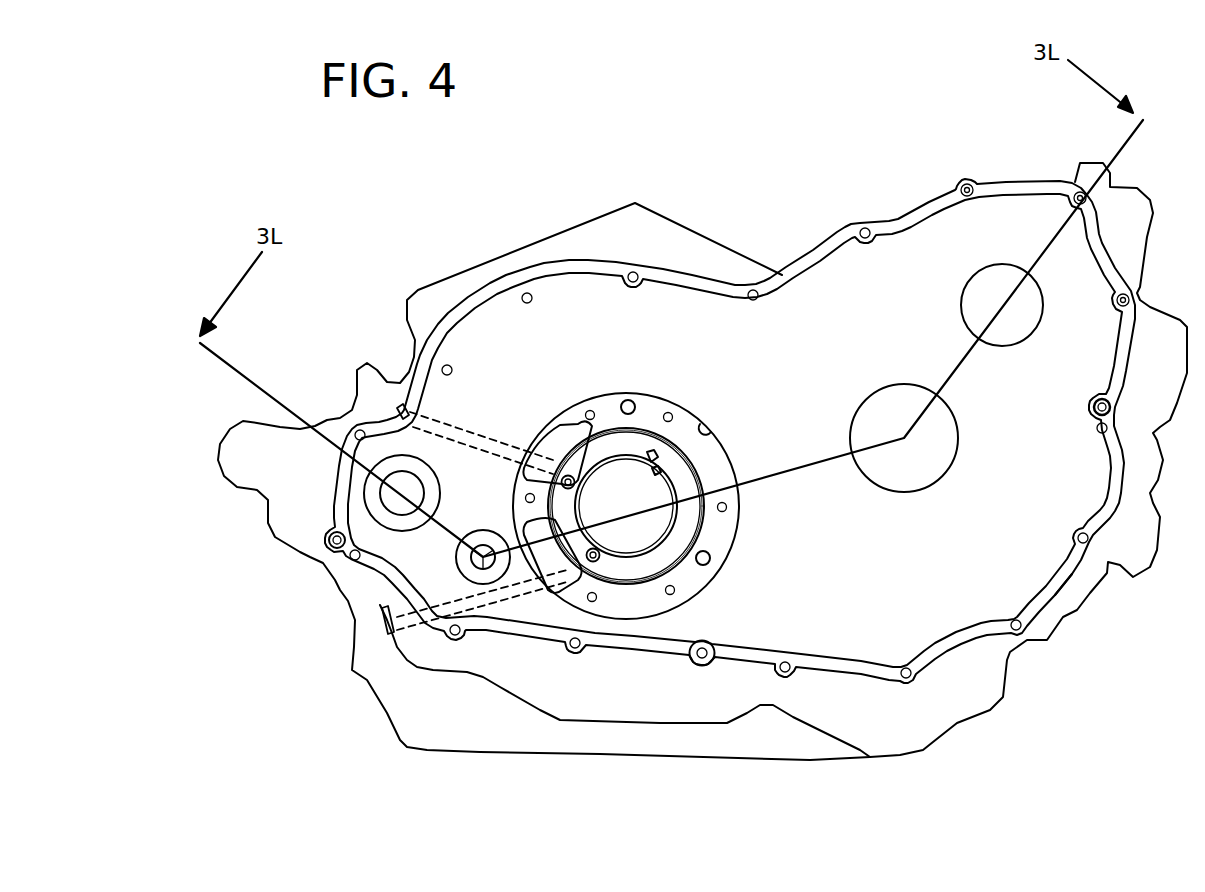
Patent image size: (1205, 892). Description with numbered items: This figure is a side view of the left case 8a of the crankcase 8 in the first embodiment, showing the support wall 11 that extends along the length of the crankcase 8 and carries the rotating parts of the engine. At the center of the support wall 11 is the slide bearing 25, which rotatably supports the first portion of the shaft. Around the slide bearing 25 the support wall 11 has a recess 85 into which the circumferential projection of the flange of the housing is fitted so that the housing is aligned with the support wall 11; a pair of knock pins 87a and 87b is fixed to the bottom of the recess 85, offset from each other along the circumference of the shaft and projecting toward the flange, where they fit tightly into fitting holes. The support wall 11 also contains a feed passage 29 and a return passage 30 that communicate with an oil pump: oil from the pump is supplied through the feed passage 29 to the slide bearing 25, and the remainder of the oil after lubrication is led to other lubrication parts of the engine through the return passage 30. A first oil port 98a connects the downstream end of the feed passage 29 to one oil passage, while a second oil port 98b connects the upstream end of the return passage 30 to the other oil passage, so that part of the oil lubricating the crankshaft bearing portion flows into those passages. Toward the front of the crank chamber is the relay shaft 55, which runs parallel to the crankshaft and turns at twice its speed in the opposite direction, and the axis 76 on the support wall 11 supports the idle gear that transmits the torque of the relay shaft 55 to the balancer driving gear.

The crankcase 8 is at (714, 280).
The left case 8a is at (1058, 578).
The support wall 11 is at (520, 610).
The slide bearing 25 is at (668, 474).
The feed passage 29 is at (436, 615).
The return passage 30 is at (487, 440).
The relay shaft 55 is at (388, 490).
The axis 76 is at (483, 545).
The recess 85 is at (712, 428).
The knock pin 87a is at (710, 561).
The knock pin 87b is at (630, 400).
The first oil port 98a is at (598, 561).
The second oil port 98b is at (575, 484).